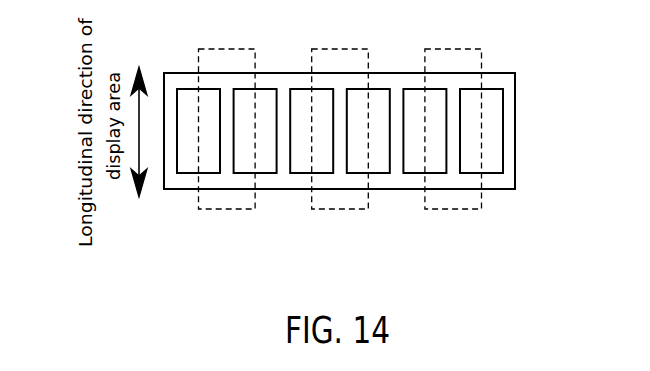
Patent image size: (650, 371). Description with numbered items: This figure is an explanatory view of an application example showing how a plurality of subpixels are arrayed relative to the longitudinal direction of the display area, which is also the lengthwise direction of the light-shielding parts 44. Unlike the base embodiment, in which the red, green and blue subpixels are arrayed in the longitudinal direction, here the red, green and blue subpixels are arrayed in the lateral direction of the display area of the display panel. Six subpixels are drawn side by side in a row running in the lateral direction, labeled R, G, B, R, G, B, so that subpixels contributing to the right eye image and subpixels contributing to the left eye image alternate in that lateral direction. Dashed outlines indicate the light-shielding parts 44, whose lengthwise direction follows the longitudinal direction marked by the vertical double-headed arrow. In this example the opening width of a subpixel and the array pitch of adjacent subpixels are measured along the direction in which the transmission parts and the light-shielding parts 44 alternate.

The light-shielding part 44 is at (218, 209).